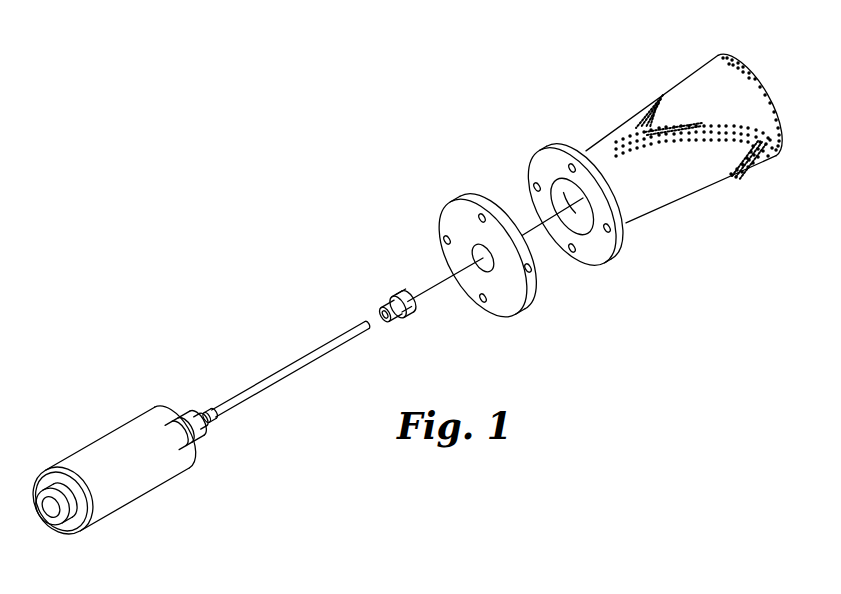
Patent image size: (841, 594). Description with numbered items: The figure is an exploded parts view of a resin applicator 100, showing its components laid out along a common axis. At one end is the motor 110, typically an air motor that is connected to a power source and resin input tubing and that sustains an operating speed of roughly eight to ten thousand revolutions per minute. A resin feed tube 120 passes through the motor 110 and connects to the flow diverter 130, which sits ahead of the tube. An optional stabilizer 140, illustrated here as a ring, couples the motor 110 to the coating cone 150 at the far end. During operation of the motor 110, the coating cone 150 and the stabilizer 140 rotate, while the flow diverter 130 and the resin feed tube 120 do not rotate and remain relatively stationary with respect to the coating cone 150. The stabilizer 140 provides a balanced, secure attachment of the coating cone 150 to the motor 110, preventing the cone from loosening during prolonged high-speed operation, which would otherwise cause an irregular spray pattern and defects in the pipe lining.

The resin applicator 100 is at (244, 185).
The motor 110 is at (110, 443).
The resin feed tube 120 is at (296, 363).
The flow diverter 130 is at (385, 300).
The stabilizer 140 is at (450, 222).
The coating cone 150 is at (692, 82).